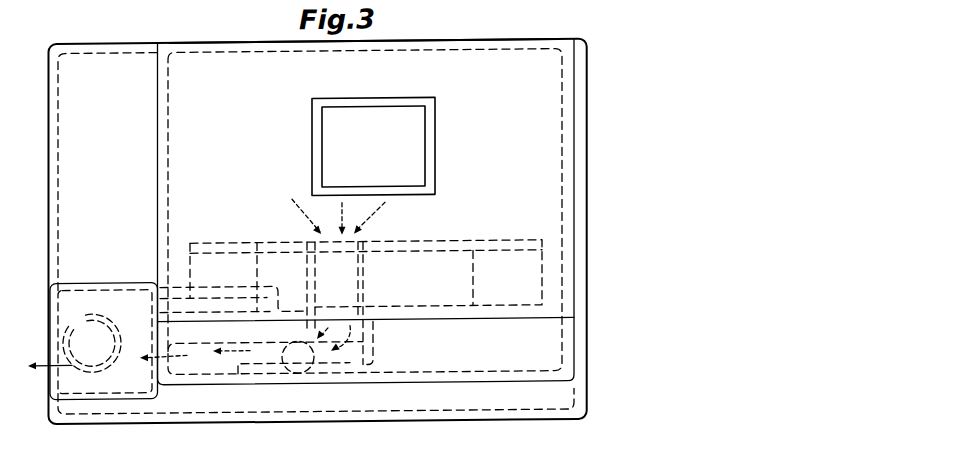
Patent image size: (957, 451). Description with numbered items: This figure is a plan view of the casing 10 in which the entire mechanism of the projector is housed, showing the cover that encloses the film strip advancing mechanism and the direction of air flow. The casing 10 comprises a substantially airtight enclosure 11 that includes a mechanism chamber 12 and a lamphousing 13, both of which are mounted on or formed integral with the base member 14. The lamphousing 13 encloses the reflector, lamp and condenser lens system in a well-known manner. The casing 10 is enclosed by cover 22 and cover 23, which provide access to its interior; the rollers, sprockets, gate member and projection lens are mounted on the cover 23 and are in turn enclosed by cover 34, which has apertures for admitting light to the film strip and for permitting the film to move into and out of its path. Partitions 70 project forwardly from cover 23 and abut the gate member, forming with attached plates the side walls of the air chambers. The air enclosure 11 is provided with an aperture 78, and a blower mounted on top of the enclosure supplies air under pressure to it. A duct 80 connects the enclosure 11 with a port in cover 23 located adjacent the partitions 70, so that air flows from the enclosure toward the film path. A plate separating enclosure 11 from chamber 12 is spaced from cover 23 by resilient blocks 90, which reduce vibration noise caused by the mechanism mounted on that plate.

The casing 10 is at (592, 118).
The substantially airtight enclosure 11 is at (535, 178).
The mechanism chamber 12 is at (527, 277).
The lamphousing 13 is at (72, 300).
The base member 14 is at (82, 139).
The cover 22 is at (433, 46).
The cover 23 is at (498, 313).
The cover 34 is at (430, 376).
The partitions 70 is at (377, 346).
The aperture 78 is at (420, 141).
The duct 80 is at (363, 278).
The resilient blocks 90 is at (218, 272).